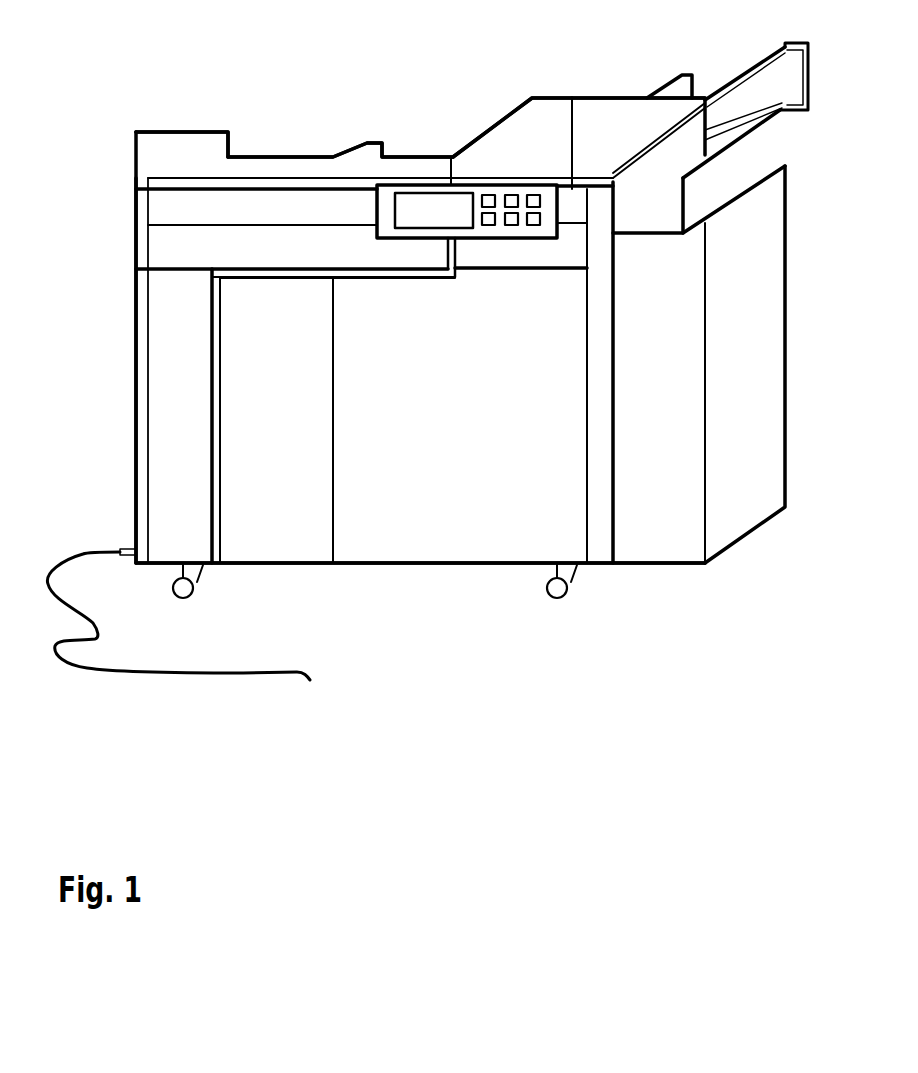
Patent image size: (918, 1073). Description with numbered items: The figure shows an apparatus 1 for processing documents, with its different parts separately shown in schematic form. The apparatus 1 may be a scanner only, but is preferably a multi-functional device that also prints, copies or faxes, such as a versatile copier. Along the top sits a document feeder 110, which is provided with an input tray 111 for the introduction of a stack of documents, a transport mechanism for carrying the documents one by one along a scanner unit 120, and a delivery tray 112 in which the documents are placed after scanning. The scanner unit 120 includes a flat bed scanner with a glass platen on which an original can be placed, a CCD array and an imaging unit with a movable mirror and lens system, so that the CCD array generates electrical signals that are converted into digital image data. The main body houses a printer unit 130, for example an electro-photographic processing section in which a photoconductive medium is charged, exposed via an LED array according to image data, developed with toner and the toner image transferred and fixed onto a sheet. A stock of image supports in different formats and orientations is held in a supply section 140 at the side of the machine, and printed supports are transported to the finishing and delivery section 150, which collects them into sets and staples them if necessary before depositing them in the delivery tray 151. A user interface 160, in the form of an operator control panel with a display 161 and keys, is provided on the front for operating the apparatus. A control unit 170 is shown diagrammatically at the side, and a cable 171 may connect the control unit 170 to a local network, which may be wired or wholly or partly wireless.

The apparatus for processing documents 1 is at (400, 60).
The document feeder 110 is at (177, 132).
The input tray 111 is at (257, 157).
The delivery tray 112 is at (495, 118).
The scanner unit 120 is at (136, 252).
The printer unit 130 is at (303, 566).
The supply section 140 is at (765, 517).
The finishing and delivery section 150 is at (592, 98).
The delivery tray 151 is at (760, 53).
The user interface 160 is at (413, 185).
The display 161 is at (396, 212).
The control unit 170 is at (136, 457).
The cable 171 is at (243, 673).